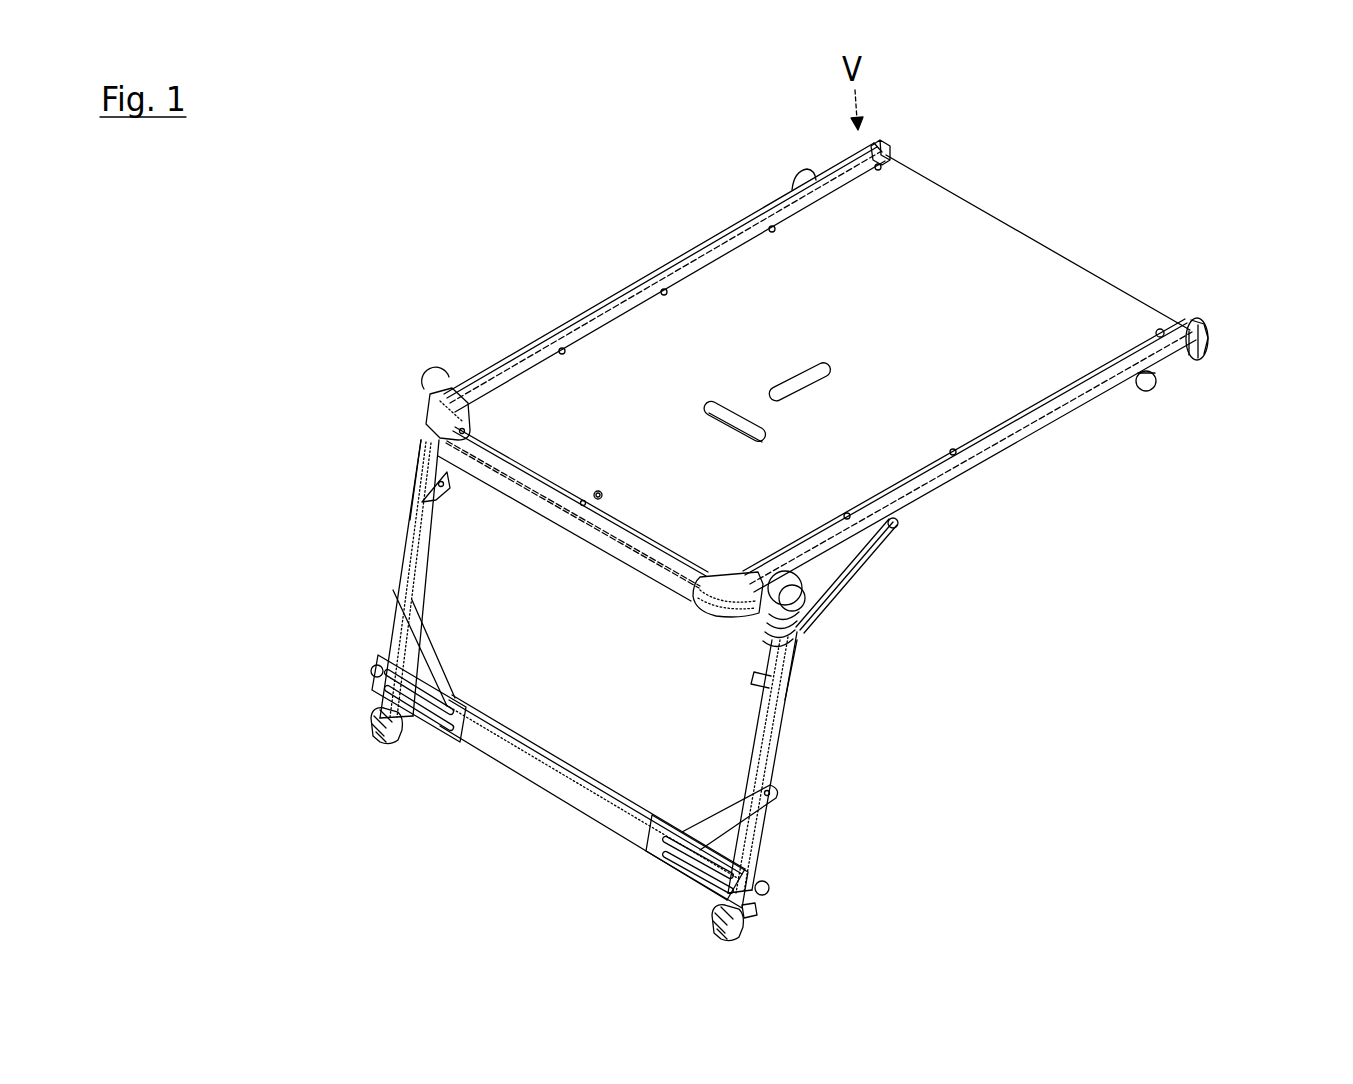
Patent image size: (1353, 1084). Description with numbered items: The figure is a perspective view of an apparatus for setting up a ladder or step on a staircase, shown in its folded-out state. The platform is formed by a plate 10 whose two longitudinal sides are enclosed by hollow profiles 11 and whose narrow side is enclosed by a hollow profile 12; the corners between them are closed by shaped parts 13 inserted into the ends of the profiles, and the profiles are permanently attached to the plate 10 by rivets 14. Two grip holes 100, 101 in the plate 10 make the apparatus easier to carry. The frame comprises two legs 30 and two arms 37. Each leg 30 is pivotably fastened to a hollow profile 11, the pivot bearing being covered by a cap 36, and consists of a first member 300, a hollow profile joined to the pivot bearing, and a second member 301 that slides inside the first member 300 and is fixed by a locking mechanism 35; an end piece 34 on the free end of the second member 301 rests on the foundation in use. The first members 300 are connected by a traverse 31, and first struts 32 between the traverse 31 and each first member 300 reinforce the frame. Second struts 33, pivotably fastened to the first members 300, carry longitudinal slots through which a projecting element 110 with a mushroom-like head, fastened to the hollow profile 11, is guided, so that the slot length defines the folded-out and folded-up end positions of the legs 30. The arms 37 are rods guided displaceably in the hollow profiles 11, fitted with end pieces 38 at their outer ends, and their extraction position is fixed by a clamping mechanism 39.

The plate 10 is at (1010, 233).
The hollow profile 11 is at (690, 257).
The hollow profile 12 is at (567, 520).
The shaped part 13 is at (433, 417).
The rivet 14 is at (1160, 331).
The leg 30 is at (410, 545).
The traverse 31 is at (590, 800).
The first strut 32 is at (410, 630).
The second strut 33 is at (843, 590).
The end piece 34 is at (370, 727).
The locking mechanism 35 is at (371, 669).
The cap 36 is at (430, 387).
The arm 37 is at (872, 146).
The end piece 38 is at (886, 150).
The clamping mechanism 39 is at (797, 175).
The grip hole 100 is at (728, 420).
The grip hole 101 is at (798, 383).
The projecting element 110 is at (893, 527).
The first member 300 is at (415, 513).
The second member 301 is at (747, 913).